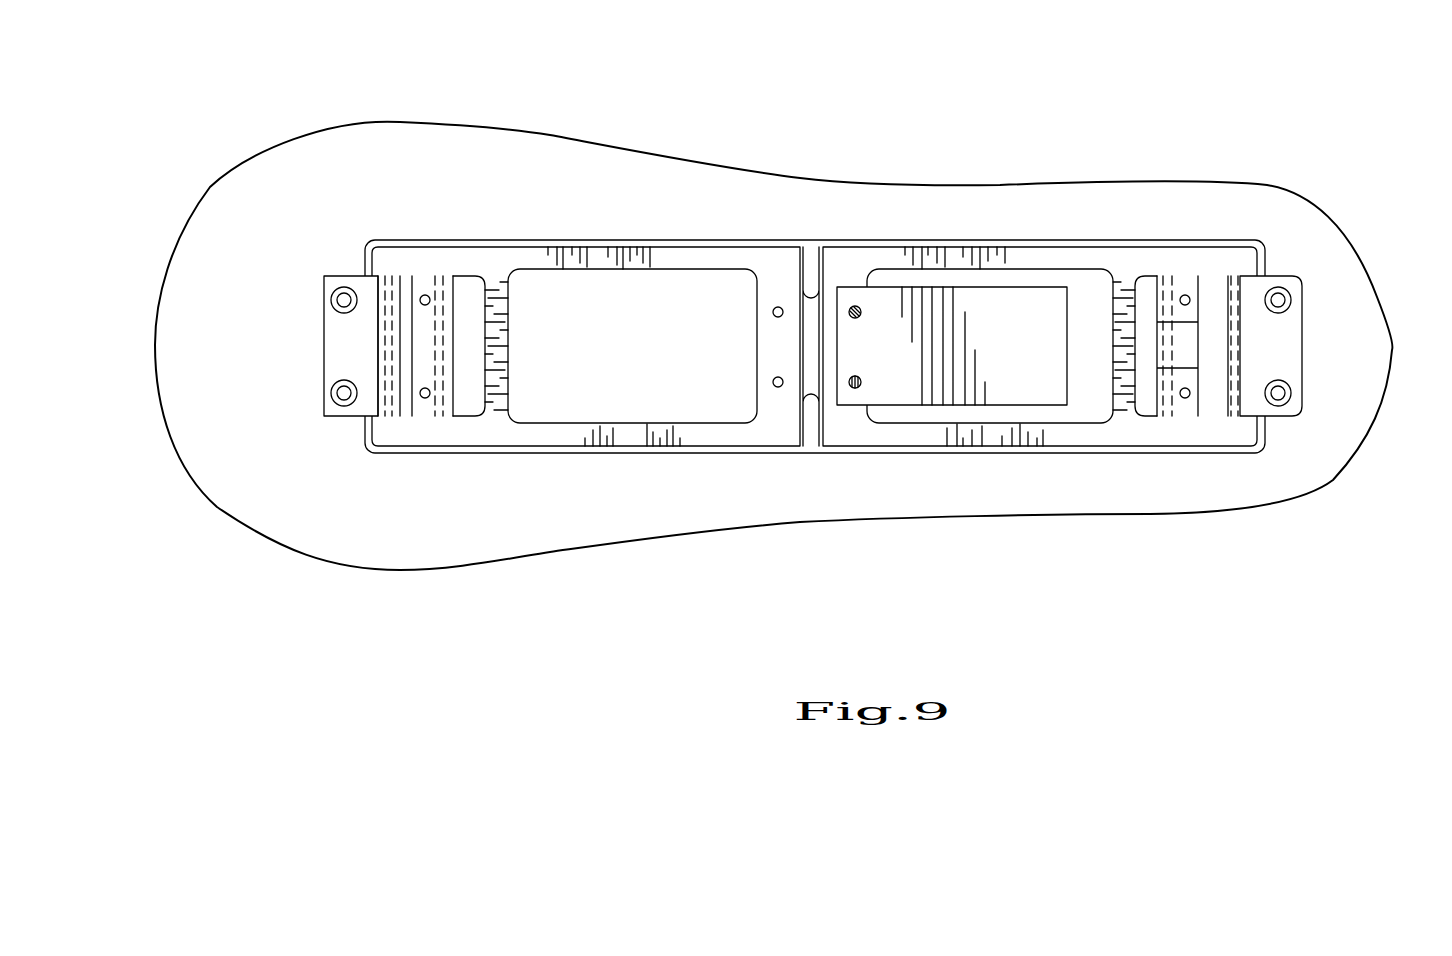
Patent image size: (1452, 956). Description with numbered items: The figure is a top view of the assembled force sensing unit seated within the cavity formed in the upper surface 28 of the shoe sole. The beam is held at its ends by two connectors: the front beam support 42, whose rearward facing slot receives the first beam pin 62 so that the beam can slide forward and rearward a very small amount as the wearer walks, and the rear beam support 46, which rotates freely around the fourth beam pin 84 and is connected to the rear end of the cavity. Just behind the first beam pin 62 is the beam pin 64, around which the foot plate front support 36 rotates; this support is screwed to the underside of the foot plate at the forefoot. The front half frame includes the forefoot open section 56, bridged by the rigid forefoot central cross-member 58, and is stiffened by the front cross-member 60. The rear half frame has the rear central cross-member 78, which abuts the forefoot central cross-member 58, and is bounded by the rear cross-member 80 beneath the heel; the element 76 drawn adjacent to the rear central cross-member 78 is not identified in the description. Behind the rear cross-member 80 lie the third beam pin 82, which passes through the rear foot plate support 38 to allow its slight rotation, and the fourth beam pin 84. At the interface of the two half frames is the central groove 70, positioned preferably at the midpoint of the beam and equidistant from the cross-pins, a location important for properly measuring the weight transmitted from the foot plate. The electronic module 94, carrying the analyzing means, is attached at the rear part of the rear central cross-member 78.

The upper surface 28 is at (405, 533).
The front beam support 42 is at (343, 341).
The rear beam support 46 is at (1290, 338).
The foot plate front support 36 is at (420, 407).
The rear foot plate support 38 is at (1148, 282).
The forefoot open section 56 is at (660, 298).
The forefoot central cross-member 58 is at (776, 292).
The front cross-member 60 is at (493, 398).
The first beam pin 62 is at (395, 277).
The beam pin 64 is at (440, 277).
The central groove 70 is at (812, 305).
The cover 76 is at (1088, 285).
The rear central cross-member 78 is at (828, 283).
The rear cross-member 80 is at (1125, 287).
The third beam pin 82 is at (1167, 417).
The fourth beam pin 84 is at (1237, 407).
The electronic module 94 is at (1045, 382).